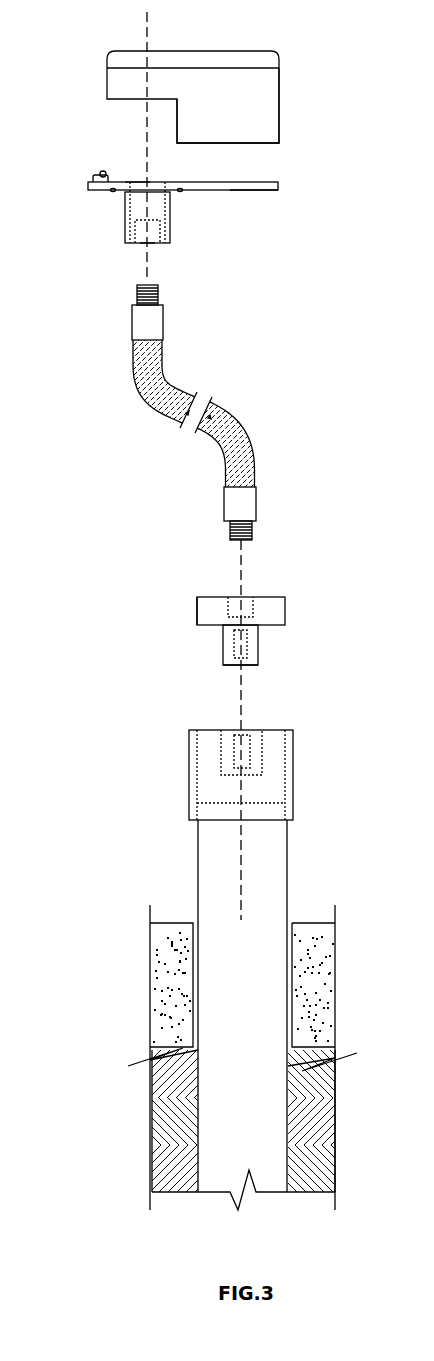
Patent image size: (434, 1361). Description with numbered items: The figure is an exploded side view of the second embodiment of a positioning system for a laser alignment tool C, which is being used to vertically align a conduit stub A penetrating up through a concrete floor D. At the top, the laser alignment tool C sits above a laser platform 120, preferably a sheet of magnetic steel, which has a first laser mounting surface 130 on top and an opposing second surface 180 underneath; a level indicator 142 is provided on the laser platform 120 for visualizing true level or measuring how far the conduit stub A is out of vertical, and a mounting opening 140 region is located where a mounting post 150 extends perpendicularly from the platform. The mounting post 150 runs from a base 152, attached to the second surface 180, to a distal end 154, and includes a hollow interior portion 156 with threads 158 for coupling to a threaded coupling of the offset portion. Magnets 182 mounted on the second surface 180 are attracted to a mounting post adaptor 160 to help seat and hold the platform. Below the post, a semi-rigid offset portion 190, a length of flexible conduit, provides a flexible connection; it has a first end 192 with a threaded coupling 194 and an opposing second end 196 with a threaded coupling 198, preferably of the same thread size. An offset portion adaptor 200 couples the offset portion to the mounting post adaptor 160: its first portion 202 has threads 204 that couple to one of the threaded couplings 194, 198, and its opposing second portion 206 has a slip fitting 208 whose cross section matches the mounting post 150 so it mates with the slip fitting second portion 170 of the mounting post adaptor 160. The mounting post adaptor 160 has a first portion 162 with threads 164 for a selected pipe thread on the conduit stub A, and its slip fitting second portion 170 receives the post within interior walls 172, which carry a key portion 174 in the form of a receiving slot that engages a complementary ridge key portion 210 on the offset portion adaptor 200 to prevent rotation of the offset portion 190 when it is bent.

The laser alignment tool C is at (257, 51).
The laser platform 120 is at (278, 186).
The first laser mounting surface 130 is at (270, 182).
The mounting opening 140 is at (136, 181).
The level indicator 142 is at (93, 178).
The mounting post 150 is at (171, 223).
The base 152 is at (125, 200).
The distal end 154 is at (132, 244).
The hollow interior portion 156 is at (143, 243).
The threads 158 is at (156, 237).
The mounting post adaptor 160 is at (293, 775).
The first portion 162 is at (293, 788).
The threads 164 is at (285, 800).
The second portion 170 is at (189, 745).
The interior walls 172 is at (225, 743).
The key portion 174 is at (240, 752).
The second surface 180 is at (253, 191).
The magnets 182 is at (112, 193).
The semi-rigid offset portion 190 is at (213, 405).
The first end 192 is at (257, 505).
The threaded coupling 194 is at (252, 533).
The second end 196 is at (165, 323).
The threaded coupling 198 is at (160, 298).
The offset portion adaptor 200 is at (285, 610).
The first portion 202 is at (197, 608).
The threads 204 is at (235, 597).
The second portion 206 is at (258, 628).
The slip fitting 208 is at (258, 660).
The key portion 210 is at (235, 653).
The conduit stub A is at (277, 892).
The concrete floor D is at (323, 963).